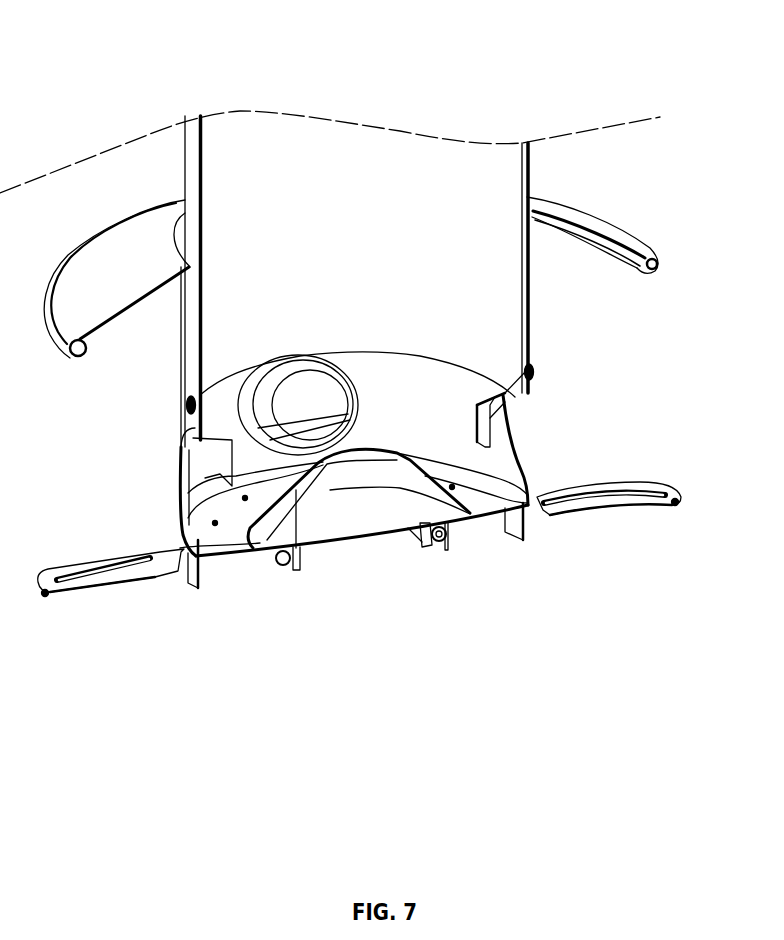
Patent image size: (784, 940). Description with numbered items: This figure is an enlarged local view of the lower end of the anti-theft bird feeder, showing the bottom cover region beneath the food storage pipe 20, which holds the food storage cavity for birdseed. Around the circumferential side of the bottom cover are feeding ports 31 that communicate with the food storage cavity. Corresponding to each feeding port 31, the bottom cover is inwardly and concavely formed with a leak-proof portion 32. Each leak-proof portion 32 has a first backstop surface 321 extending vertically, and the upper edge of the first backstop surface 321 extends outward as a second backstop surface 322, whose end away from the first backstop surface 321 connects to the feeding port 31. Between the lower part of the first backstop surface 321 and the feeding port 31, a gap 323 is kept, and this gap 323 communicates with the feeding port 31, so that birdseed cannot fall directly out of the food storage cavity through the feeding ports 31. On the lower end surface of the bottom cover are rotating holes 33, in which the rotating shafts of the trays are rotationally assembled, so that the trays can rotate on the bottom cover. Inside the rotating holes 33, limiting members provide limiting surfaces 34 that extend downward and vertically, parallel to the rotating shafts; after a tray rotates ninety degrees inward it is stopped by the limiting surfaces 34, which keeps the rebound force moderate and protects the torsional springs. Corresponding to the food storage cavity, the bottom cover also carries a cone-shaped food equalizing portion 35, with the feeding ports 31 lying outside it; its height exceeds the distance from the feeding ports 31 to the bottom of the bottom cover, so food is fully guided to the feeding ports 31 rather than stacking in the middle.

The food storage pipe 20 is at (242, 167).
The feeding port 31 is at (182, 493).
The leak-proof portion 32 is at (596, 382).
The first backstop surface 321 is at (495, 418).
The second backstop surface 322 is at (535, 367).
The gap 323 is at (502, 472).
The rotating hole 33 is at (447, 550).
The limiting surface 34 is at (425, 548).
The food equalizing portion 35 is at (292, 571).